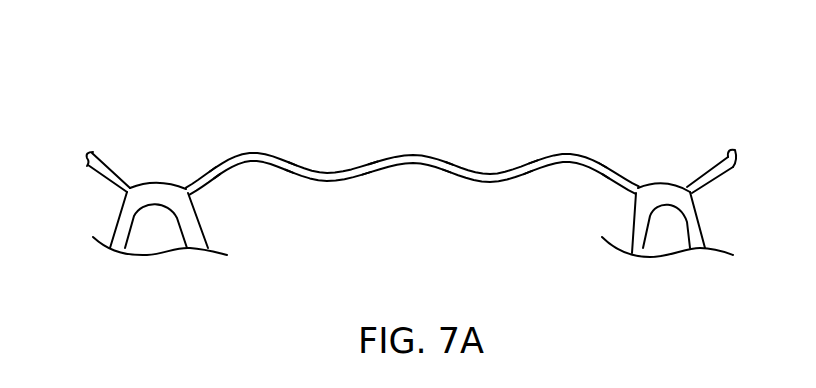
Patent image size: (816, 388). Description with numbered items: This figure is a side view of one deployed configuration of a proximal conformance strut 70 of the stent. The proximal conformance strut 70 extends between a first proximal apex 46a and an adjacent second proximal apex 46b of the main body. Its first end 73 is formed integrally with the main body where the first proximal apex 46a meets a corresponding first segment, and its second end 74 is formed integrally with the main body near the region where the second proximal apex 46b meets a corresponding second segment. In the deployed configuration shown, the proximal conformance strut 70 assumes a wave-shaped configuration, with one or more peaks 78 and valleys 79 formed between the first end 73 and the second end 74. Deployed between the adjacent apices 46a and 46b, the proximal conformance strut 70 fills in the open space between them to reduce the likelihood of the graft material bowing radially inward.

The proximal conformance strut 70 is at (283, 108).
The first proximal apex 46a is at (663, 192).
The second proximal apex 46b is at (157, 192).
The first end 73 is at (633, 190).
The second end 74 is at (189, 186).
The peak 78 is at (398, 154).
The valley 79 is at (330, 183).